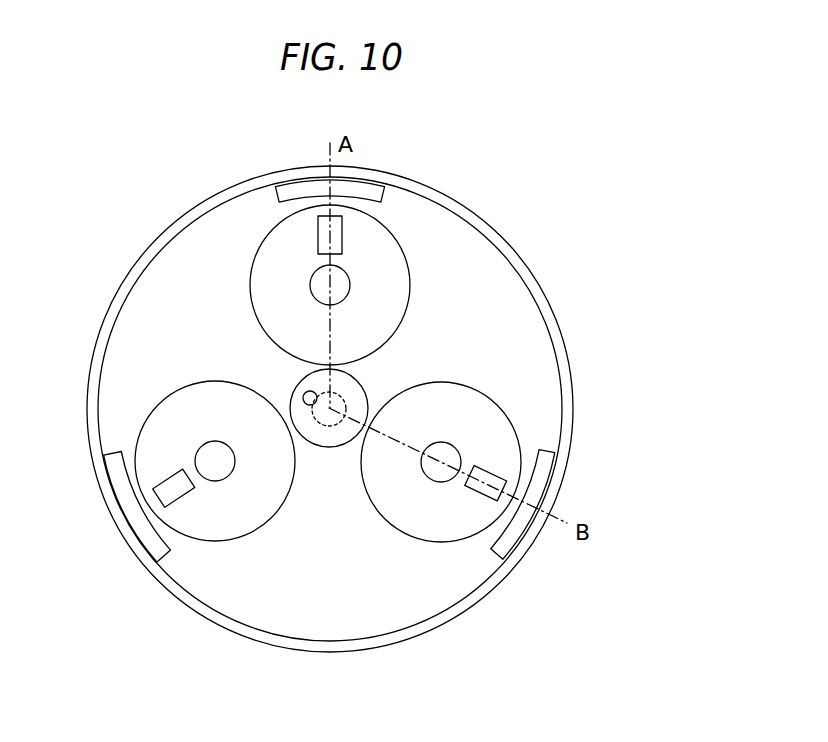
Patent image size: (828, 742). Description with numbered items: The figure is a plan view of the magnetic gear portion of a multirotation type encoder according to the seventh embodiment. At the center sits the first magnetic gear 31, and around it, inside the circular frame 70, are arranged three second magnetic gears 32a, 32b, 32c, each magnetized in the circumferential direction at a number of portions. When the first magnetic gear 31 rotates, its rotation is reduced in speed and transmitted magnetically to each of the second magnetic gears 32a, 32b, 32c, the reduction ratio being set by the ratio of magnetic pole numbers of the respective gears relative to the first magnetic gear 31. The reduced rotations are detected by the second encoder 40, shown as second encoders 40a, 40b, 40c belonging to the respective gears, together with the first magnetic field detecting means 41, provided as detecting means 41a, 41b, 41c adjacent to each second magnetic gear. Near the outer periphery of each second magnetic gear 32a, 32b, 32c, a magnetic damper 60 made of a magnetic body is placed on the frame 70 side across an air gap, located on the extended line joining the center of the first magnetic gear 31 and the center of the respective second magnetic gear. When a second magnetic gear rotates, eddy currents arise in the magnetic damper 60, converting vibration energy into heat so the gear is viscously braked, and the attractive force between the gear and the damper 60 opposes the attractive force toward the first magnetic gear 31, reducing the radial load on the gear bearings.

The first magnetic gear 31 is at (325, 451).
The second magnetic gear 32a is at (374, 256).
The second magnetic gear 32b is at (423, 533).
The second magnetic gear 32c is at (190, 407).
The second encoder 40 is at (482, 170).
The second encoder 40a is at (326, 272).
The second encoder 40b is at (496, 516).
The second encoder 40c is at (170, 487).
The first magnetic field detecting means 41 is at (587, 284).
The first magnetic field detecting means 41a is at (318, 234).
The first magnetic field detecting means 41b is at (494, 473).
The first magnetic field detecting means 41c is at (174, 488).
The magnetic damper 60 is at (386, 188).
The frame 70 is at (192, 206).